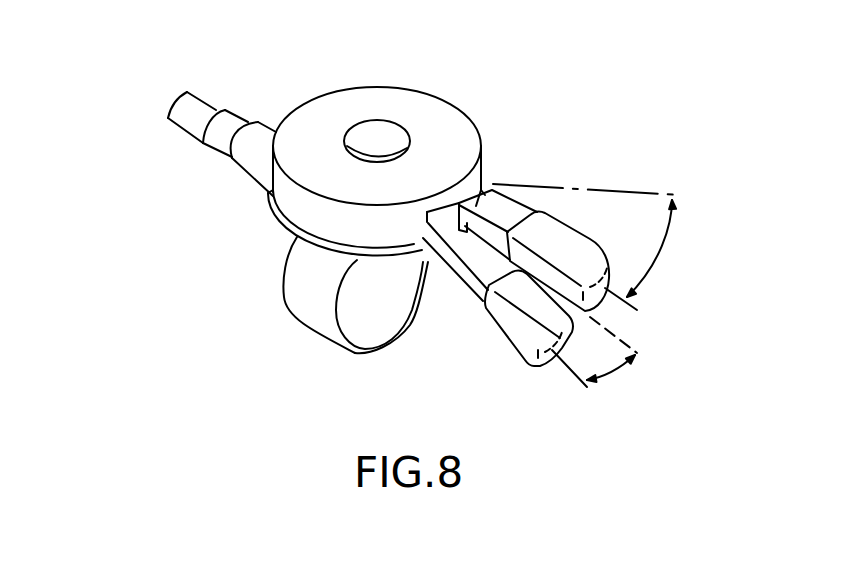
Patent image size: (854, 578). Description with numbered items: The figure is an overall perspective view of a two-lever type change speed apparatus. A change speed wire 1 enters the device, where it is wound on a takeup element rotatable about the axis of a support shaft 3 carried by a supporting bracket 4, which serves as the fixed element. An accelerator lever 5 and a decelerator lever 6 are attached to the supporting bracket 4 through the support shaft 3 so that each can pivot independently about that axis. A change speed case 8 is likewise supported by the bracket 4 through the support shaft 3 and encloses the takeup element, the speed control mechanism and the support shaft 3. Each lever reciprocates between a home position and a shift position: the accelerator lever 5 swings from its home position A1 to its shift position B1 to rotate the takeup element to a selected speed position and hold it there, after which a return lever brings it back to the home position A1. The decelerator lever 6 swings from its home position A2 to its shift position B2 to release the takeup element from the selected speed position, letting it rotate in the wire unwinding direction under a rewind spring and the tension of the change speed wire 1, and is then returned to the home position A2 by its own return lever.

The change speed wire 1 is at (188, 121).
The support shaft 3 is at (387, 142).
The supporting bracket 4 is at (293, 277).
The accelerator lever 5 is at (583, 240).
The decelerator lever 6 is at (508, 328).
The change speed case 8 is at (300, 117).
The home position of accelerator lever A1 is at (645, 311).
The home position of decelerator lever A2 is at (591, 384).
The shift position of accelerator lever B1 is at (610, 237).
The shift position of decelerator lever B2 is at (639, 348).